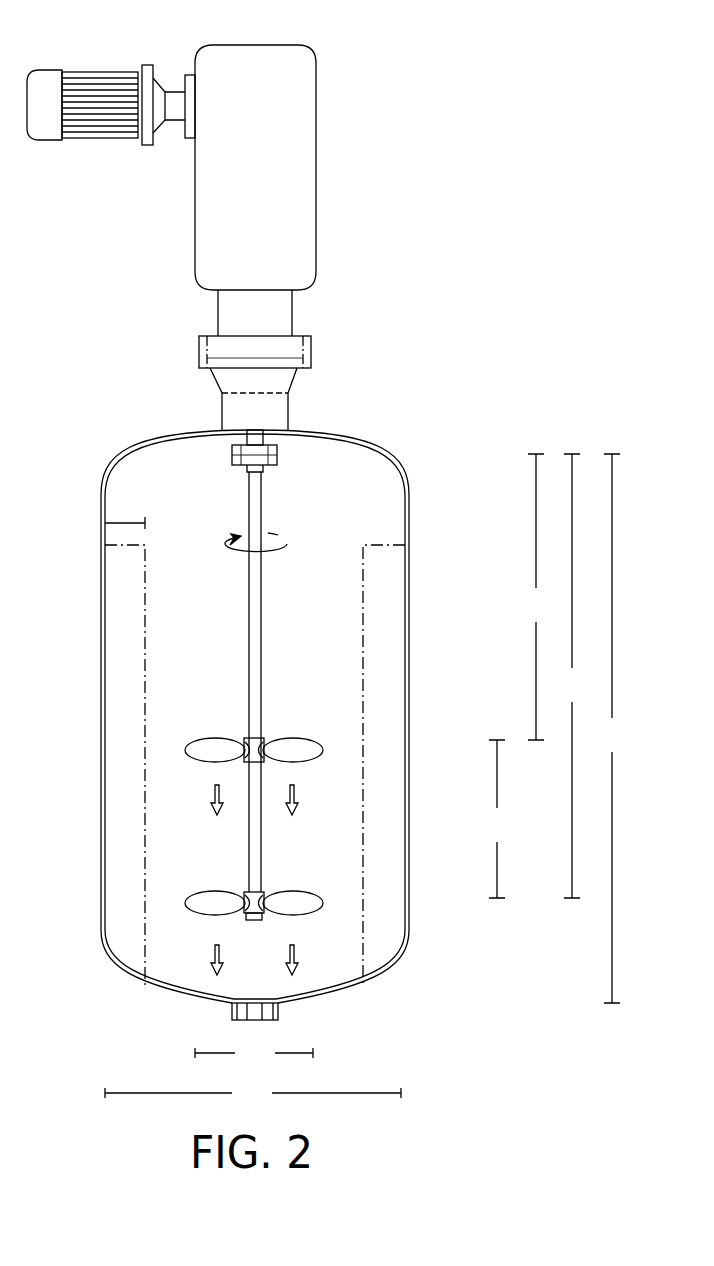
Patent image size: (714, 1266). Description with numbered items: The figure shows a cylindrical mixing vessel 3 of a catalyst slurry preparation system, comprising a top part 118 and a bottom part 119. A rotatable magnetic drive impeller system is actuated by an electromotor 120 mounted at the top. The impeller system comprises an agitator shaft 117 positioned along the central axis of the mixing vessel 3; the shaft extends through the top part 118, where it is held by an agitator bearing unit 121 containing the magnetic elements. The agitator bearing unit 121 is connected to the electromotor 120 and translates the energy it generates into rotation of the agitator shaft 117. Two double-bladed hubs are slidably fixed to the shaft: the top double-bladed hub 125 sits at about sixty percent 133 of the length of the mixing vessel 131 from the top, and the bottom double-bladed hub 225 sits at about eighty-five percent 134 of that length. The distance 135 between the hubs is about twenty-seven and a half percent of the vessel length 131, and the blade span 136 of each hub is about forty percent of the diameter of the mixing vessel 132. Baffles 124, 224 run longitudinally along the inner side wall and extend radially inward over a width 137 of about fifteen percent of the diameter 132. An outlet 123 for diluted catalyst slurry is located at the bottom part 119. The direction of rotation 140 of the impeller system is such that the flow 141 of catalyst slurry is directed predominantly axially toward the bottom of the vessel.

The mixing vessel 3 is at (416, 418).
The agitator shaft 117 is at (251, 612).
The top part 118 is at (173, 473).
The bottom part 119 is at (173, 975).
The electromotor 120 is at (100, 72).
The agitator bearing unit 121 is at (297, 158).
The outlet 123 is at (232, 1011).
The baffle 124 is at (125, 755).
The baffle 224 is at (382, 755).
The top double-bladed hub 125 is at (217, 893).
The bottom double-bladed hub 225 is at (217, 740).
The length of the mixing vessel 131 is at (612, 728).
The diameter of the mixing vessel 132 is at (253, 1094).
The position of the top double-bladed hub 133 is at (536, 597).
The position of the bottom double-bladed hub 134 is at (572, 676).
The distance between the two double-bladed hubs 135 is at (497, 819).
The blade span 136 is at (254, 1054).
The width of the baffles 137 is at (128, 522).
The direction of rotation 140 is at (290, 541).
The flow 141 is at (297, 798).